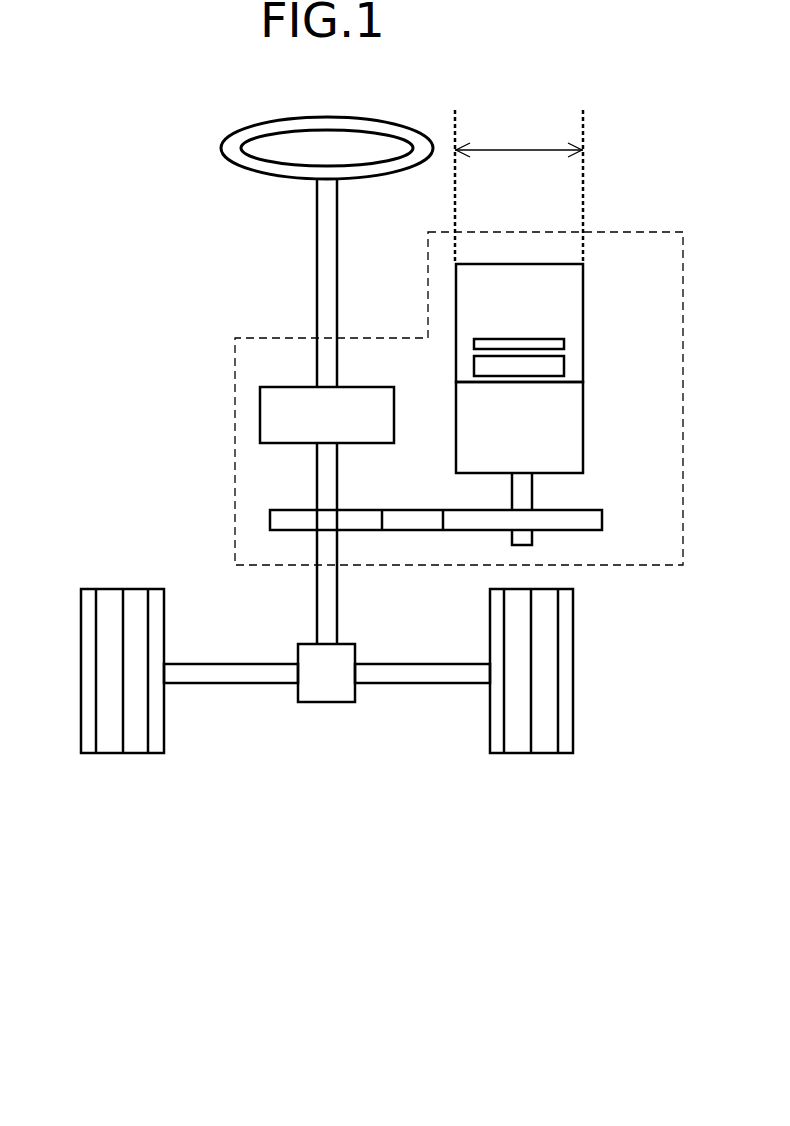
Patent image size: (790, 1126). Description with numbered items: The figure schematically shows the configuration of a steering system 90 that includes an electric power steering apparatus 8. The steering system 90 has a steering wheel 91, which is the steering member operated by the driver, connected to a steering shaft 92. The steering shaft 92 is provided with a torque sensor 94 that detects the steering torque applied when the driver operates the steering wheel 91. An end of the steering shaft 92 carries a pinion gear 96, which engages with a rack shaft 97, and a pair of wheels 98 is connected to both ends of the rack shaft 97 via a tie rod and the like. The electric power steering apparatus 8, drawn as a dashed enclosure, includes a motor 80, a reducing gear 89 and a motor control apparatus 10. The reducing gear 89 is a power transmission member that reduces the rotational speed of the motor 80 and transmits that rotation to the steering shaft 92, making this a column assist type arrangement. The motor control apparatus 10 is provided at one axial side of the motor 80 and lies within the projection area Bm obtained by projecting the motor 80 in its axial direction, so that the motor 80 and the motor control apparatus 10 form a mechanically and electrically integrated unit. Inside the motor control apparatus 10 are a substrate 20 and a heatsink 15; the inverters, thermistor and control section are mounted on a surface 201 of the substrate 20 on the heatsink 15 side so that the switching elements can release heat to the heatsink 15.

The steering wheel 91 is at (221, 150).
The steering shaft 92 is at (317, 233).
The projection area Bm is at (519, 147).
The electric power steering apparatus 8 is at (630, 232).
The motor control apparatus 10 is at (583, 278).
The substrate 20 is at (564, 343).
The heatsink 15 is at (564, 365).
The surface 201 is at (492, 350).
The motor 80 is at (583, 421).
The reducing gear 89 is at (602, 520).
The torque sensor 94 is at (260, 404).
The pinion gear 96 is at (318, 702).
The rack shaft 97 is at (224, 683).
The wheels 98 is at (137, 753).
The steering system 90 is at (290, 830).